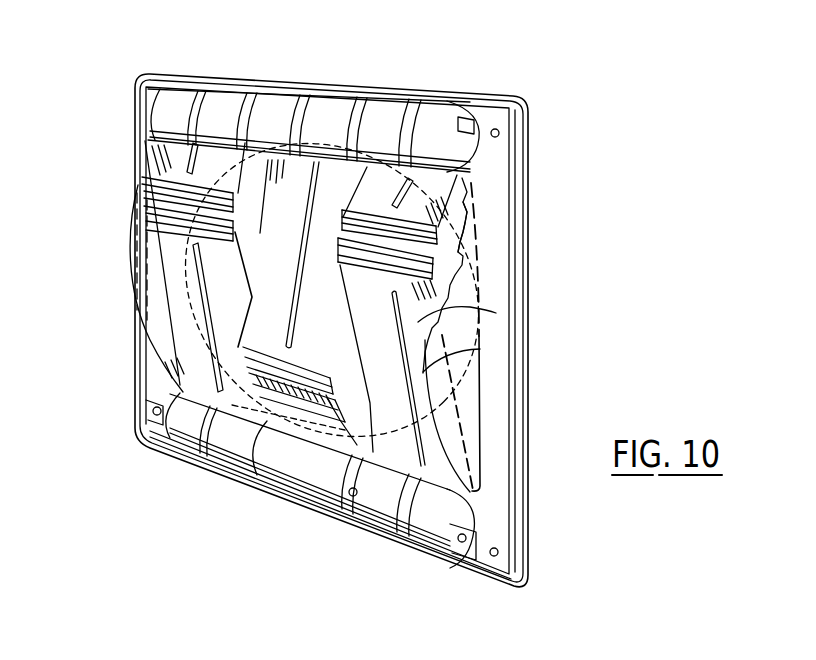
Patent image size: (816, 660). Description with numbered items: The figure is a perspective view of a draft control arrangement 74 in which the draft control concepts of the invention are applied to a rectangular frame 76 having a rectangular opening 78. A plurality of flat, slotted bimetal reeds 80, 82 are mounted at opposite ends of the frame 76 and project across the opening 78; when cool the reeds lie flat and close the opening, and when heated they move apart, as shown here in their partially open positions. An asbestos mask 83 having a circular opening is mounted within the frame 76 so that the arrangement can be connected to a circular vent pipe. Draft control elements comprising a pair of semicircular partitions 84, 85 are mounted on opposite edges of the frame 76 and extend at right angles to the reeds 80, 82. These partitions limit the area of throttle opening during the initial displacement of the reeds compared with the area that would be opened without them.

The draft control arrangement 74 is at (558, 181).
The rectangular frame 76 is at (522, 272).
The rectangular opening 78 is at (481, 397).
The bimetal reed 80 is at (496, 313).
The bimetal reed 82 is at (462, 179).
The asbestos mask 83 is at (451, 244).
The semicircular partition 84 is at (480, 349).
The semicircular partition 85 is at (127, 242).